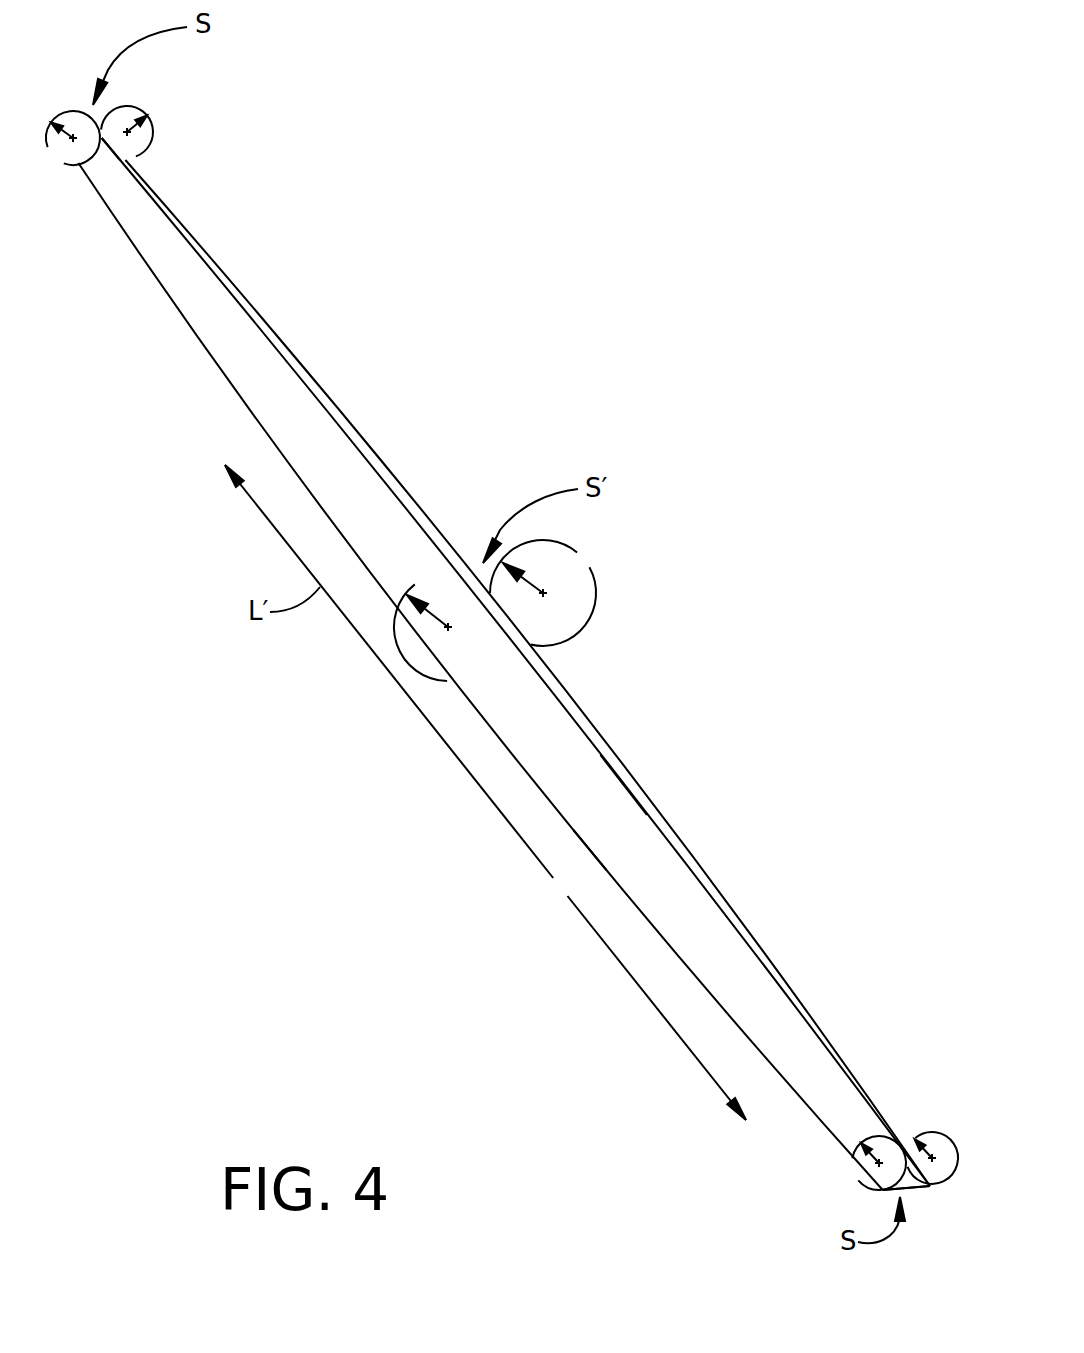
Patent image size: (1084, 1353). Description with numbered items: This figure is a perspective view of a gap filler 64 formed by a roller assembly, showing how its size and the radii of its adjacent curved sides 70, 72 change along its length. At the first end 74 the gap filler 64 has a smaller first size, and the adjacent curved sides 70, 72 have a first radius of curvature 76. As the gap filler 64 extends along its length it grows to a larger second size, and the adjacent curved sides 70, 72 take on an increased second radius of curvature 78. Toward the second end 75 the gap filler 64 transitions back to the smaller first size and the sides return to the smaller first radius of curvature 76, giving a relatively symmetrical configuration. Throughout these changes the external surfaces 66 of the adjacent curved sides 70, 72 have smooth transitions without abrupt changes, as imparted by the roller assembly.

The gap filler 64 is at (433, 470).
The external surface 66 is at (673, 839).
The adjacent curved side 70 is at (640, 785).
The adjacent curved side 72 is at (595, 818).
The first end 74 is at (920, 1218).
The second end 75 is at (118, 122).
The first radius of curvature 76 is at (52, 137).
The second radius of curvature 78 is at (438, 616).